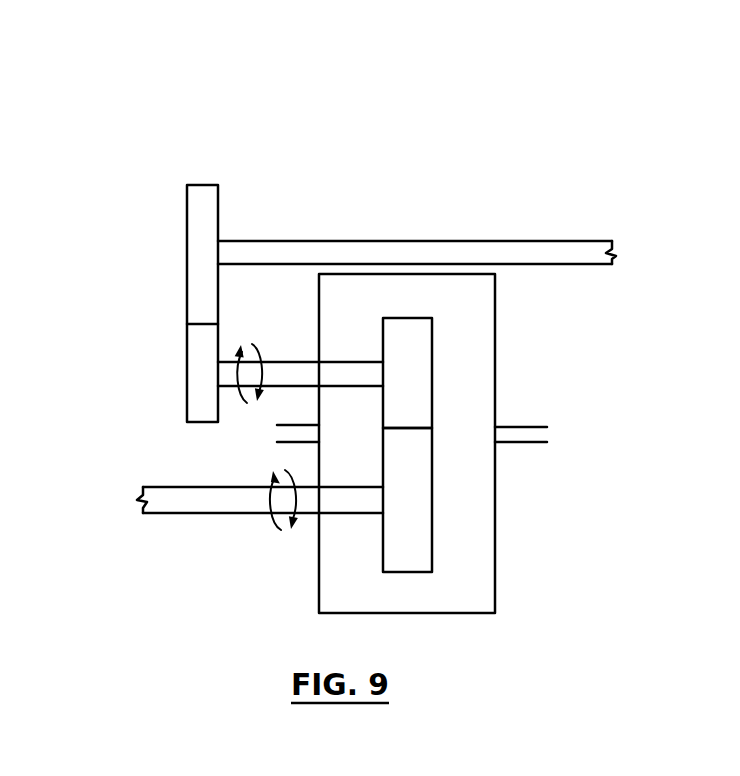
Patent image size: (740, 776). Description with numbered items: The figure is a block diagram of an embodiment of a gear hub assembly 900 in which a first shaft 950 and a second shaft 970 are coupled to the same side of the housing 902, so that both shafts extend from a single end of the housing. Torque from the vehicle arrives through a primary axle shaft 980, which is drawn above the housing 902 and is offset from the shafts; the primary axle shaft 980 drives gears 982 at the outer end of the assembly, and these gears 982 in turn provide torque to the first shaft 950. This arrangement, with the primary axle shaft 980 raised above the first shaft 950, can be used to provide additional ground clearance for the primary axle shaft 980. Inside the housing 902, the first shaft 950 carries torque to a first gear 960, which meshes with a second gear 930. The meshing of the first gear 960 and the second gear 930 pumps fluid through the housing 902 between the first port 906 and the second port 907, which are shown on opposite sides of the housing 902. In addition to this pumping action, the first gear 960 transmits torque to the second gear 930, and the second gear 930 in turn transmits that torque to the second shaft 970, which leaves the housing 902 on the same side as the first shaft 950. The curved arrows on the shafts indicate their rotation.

The gear hub assembly 900 is at (462, 95).
The housing 902 is at (458, 275).
The first port 906 is at (495, 422).
The second port 907 is at (318, 443).
The second gear 930 is at (424, 495).
The first shaft 950 is at (273, 402).
The first gear 960 is at (425, 373).
The second shaft 970 is at (207, 513).
The primary axle shaft 980 is at (369, 228).
The gears 982 is at (162, 248).